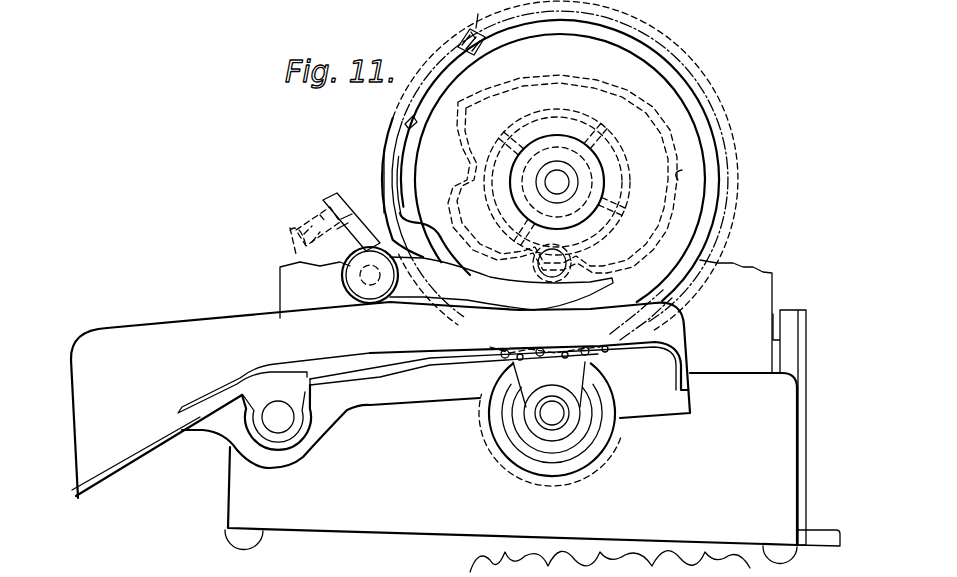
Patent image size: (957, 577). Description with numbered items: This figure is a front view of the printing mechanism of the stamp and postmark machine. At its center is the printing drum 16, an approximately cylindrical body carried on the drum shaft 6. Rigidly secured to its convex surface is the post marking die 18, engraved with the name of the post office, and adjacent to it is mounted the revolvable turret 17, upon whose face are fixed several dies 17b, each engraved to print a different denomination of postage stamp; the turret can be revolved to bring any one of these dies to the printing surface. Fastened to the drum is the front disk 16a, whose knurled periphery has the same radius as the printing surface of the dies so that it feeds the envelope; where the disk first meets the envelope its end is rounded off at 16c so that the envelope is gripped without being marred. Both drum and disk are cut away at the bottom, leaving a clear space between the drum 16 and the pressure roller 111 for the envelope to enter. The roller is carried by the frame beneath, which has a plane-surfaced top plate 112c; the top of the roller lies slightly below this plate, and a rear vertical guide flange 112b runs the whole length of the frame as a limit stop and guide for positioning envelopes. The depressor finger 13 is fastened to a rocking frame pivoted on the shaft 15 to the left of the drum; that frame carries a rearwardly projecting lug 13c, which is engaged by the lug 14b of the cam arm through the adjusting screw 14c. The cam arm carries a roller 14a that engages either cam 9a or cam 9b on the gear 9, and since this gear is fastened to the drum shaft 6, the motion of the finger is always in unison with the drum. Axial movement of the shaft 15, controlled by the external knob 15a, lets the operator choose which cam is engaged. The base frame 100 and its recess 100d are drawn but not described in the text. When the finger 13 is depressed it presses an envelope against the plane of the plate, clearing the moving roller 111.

The drum shaft 6 is at (535, 181).
The gear 9 is at (499, 348).
The cam 9a is at (687, 182).
The cam 9b is at (630, 166).
The depressor finger 13 is at (598, 280).
The lug 13c is at (342, 216).
The roller 14a is at (575, 265).
The lug 14b is at (300, 226).
The adjusting screw 14c is at (322, 213).
The shaft 15 is at (345, 270).
The knob 15a is at (350, 292).
The printing drum 16 is at (657, 97).
The front disk 16a is at (650, 47).
The rounded ends 16c is at (397, 212).
The revolvable turret 17 is at (396, 150).
The dies 17b is at (383, 158).
The post marking die 18 is at (477, 19).
The base frame 100 is at (806, 413).
The roller recess 100d is at (292, 430).
The pressure roller 111 is at (618, 440).
The rear vertical guide flange 112b is at (143, 328).
The top plate 112c is at (448, 366).